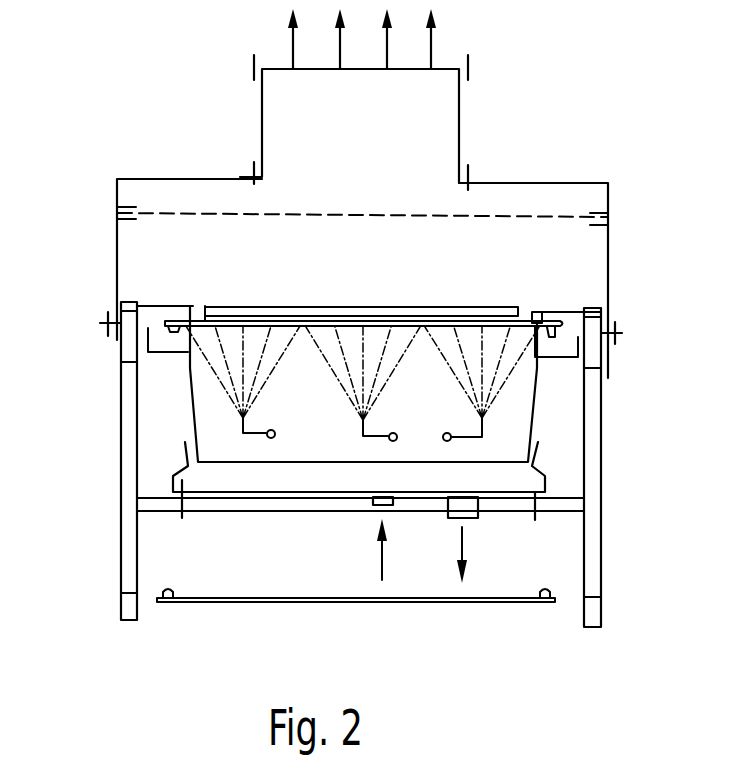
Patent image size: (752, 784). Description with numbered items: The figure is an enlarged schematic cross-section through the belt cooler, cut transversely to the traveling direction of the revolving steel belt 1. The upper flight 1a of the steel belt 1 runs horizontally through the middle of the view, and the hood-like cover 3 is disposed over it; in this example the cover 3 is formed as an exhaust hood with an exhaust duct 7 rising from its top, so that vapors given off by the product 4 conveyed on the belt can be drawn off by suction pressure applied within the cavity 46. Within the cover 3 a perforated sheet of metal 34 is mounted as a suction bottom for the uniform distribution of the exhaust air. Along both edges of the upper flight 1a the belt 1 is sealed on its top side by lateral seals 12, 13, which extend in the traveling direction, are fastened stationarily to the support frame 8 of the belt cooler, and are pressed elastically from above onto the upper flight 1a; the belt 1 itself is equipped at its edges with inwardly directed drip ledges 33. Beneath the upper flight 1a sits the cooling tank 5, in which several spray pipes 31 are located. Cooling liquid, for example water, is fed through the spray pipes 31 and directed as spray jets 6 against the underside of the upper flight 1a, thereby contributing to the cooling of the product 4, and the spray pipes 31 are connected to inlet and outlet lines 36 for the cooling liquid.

The steel belt 1 is at (237, 602).
The upper flight 1a is at (287, 321).
The cover hood 3 is at (520, 182).
The product 4 is at (418, 316).
The cooling tank 5 is at (290, 460).
The spray jets 6 is at (230, 375).
The exhaust duct 7 is at (446, 108).
The support frame 8 is at (123, 550).
The lateral seal 12 is at (532, 312).
The lateral seal 13 is at (563, 312).
The spray pipe 31 is at (276, 430).
The drip ledge 33 is at (553, 337).
The perforated sheet of metal 34 is at (315, 214).
The inlet and outlet lines 36 is at (468, 512).
The cavity 46 is at (183, 252).